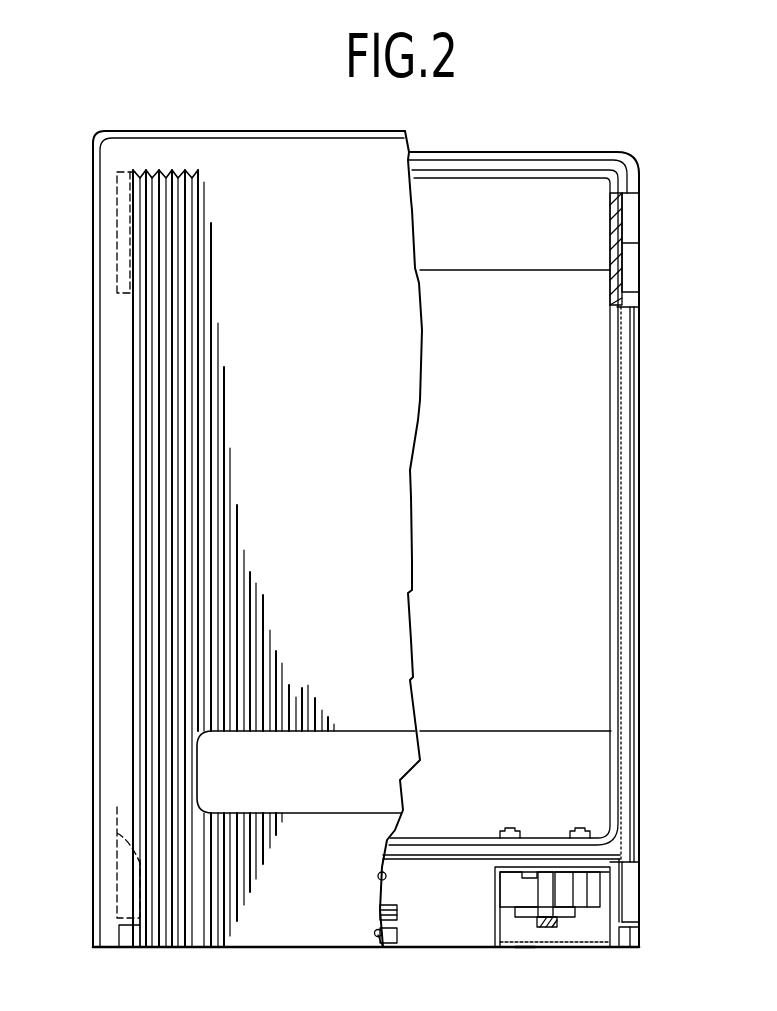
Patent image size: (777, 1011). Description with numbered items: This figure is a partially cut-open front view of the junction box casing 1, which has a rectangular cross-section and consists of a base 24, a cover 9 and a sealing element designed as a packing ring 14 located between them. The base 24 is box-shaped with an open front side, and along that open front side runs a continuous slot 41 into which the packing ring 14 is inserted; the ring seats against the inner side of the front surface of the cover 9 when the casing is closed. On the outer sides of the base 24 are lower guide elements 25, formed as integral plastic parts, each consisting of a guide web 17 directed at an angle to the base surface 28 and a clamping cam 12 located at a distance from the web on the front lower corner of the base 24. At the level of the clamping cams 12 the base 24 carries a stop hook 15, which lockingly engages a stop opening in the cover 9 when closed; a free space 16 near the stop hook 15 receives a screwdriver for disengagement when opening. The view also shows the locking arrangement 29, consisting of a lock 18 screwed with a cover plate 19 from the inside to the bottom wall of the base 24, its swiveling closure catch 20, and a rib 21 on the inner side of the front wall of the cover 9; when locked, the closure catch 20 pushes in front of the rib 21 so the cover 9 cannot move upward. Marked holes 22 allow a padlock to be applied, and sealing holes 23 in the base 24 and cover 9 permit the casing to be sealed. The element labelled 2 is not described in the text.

The junction box casing 1 is at (503, 150).
The section indicator / stiffening block 2 is at (643, 253).
The cover 9 is at (308, 915).
The clamping cam 12 is at (630, 937).
The packing ring 14 is at (627, 543).
The stop hook 15 is at (398, 912).
The free space 16 is at (400, 932).
The guide web 17 is at (632, 903).
The lock 18 is at (583, 900).
The cover plate 19 is at (570, 943).
The closure catch 20 is at (543, 890).
The rib 21 is at (545, 930).
The marked holes 22 is at (387, 876).
The sealing holes 23 is at (377, 932).
The base 24 is at (639, 388).
The lower guide elements 25 is at (639, 878).
The base surface 28 is at (435, 949).
The locking arrangement 29 is at (526, 946).
The continuous slot 41 is at (632, 417).